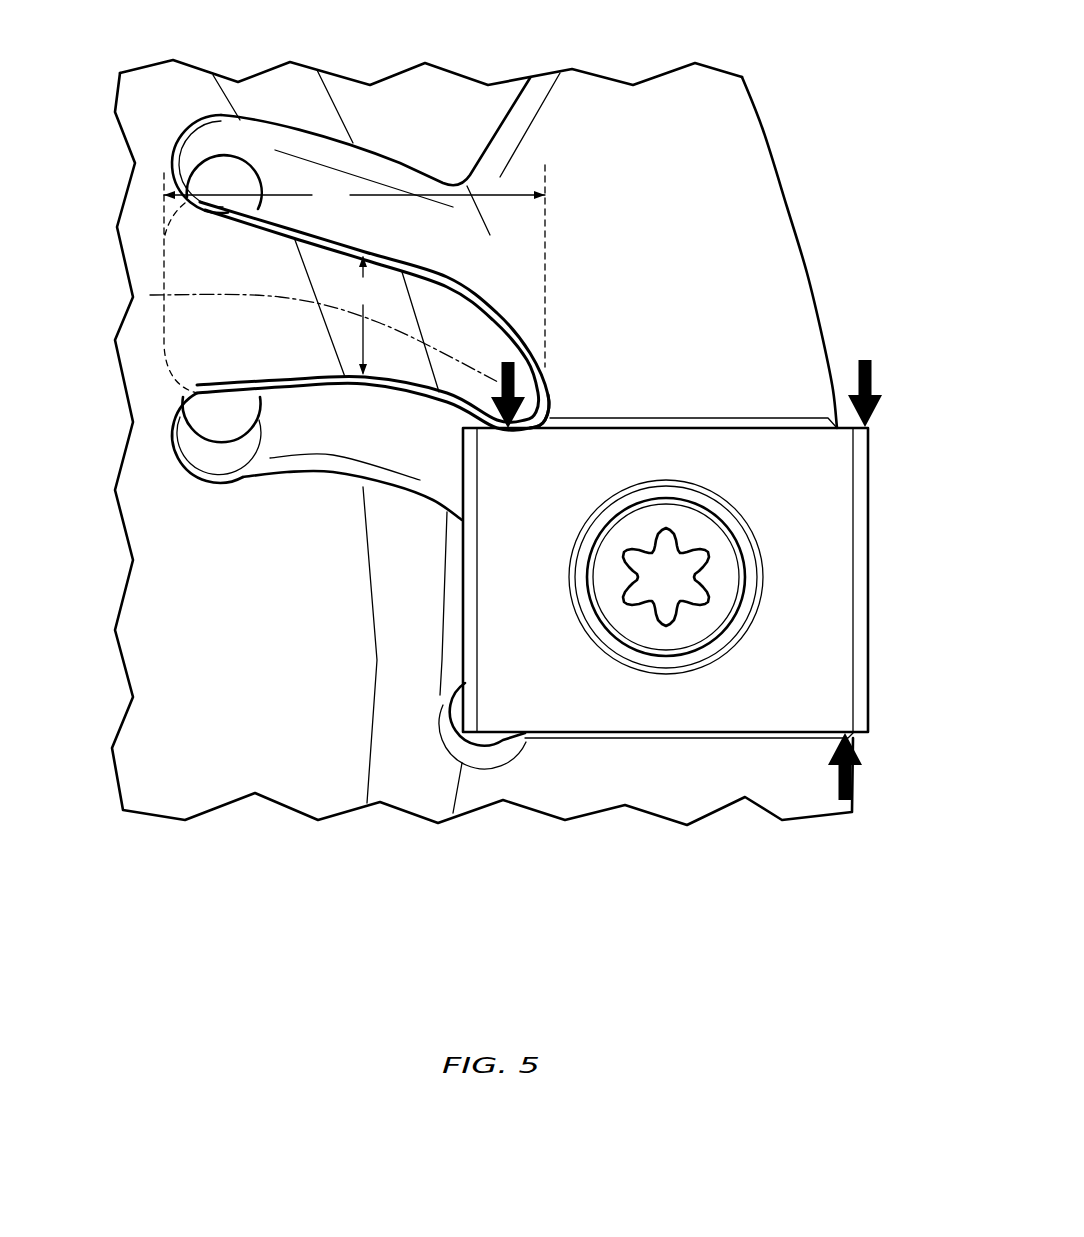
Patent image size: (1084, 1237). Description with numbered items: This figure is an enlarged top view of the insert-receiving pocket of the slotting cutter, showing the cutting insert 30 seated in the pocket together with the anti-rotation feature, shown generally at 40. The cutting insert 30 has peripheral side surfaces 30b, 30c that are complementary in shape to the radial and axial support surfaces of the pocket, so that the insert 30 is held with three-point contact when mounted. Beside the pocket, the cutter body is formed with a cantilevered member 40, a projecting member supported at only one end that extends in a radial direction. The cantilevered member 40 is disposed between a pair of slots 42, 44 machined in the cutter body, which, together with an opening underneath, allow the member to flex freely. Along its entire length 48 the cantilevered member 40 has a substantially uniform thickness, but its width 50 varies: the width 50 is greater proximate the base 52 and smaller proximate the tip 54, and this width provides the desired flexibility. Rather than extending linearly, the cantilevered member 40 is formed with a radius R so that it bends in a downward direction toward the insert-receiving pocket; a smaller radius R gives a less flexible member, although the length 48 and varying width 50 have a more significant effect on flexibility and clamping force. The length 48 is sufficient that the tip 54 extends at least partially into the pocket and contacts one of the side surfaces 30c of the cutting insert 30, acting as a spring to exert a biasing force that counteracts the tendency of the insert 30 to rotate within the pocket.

The cutting insert 30 is at (879, 552).
The peripheral side surface 30b is at (462, 588).
The peripheral side surface 30c is at (677, 428).
The anti-rotation feature (cantilevered member) 40 is at (463, 291).
The slot 42 is at (303, 417).
The slot 44 is at (283, 170).
The length 48 is at (354, 266).
The width 50 is at (363, 315).
The base 52 is at (178, 272).
The tip 54 is at (550, 394).
The radius R is at (264, 297).